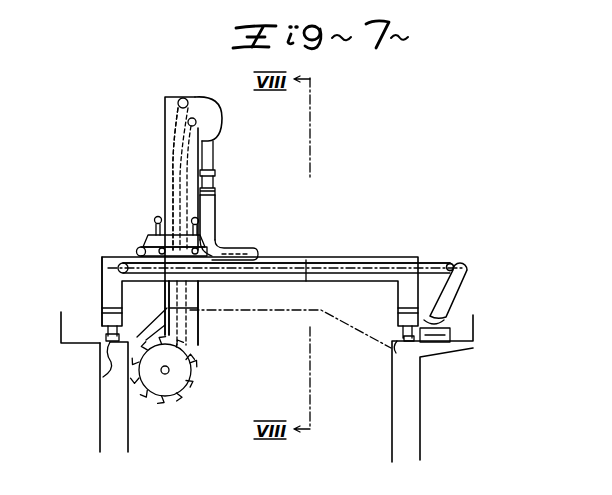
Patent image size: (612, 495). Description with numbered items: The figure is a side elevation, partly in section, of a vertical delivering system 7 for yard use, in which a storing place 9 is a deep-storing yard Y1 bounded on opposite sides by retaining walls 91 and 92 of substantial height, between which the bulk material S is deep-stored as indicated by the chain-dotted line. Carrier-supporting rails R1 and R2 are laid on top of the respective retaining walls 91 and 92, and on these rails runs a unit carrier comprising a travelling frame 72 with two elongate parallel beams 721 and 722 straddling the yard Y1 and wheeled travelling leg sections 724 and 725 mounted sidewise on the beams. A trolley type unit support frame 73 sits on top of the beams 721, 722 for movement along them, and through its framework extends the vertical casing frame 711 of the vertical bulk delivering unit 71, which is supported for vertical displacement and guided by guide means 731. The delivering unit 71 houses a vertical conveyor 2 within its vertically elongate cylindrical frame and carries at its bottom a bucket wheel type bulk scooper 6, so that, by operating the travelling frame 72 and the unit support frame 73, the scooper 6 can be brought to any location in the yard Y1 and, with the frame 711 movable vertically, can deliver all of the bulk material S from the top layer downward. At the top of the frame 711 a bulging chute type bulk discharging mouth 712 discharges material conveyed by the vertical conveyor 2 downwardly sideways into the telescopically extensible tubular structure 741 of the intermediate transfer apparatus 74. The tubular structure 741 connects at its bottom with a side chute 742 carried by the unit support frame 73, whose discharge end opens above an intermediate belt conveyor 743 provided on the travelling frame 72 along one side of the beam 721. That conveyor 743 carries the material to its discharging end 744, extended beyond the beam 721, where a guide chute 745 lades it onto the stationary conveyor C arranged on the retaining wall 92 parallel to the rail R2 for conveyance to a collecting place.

The vertical conveyor 2 is at (175, 122).
The bucket wheel type bulk scooper 6 is at (214, 359).
The vertical delivering system 7 is at (296, 135).
The storing place 9 is at (82, 310).
The vertical bulk delivering unit 71 is at (159, 168).
The travelling frame 72 is at (375, 227).
The unit support frame 73 is at (137, 233).
The intermediate transfer apparatus 74 is at (225, 213).
The retaining wall 91 is at (128, 428).
The retaining wall 92 is at (392, 418).
The vertical casing frame 711 is at (190, 304).
The bulk discharging mouth 712 is at (222, 120).
The beam 721 is at (396, 260).
The beam 722 is at (298, 230).
The travelling leg section 724 is at (102, 291).
The travelling leg section 725 is at (436, 260).
The guide means 731 is at (156, 230).
The tubular structure 741 is at (214, 166).
The side chute 742 is at (217, 230).
The intermediate belt conveyor 743 is at (310, 258).
The discharging end 744 is at (462, 266).
The guide chute 745 is at (466, 268).
The stationary conveyor C is at (456, 314).
The bulk material S is at (322, 308).
The carrier-supporting rail R1 is at (104, 370).
The carrier-supporting rail R2 is at (396, 336).
The deep-storing yard Y1 is at (237, 444).